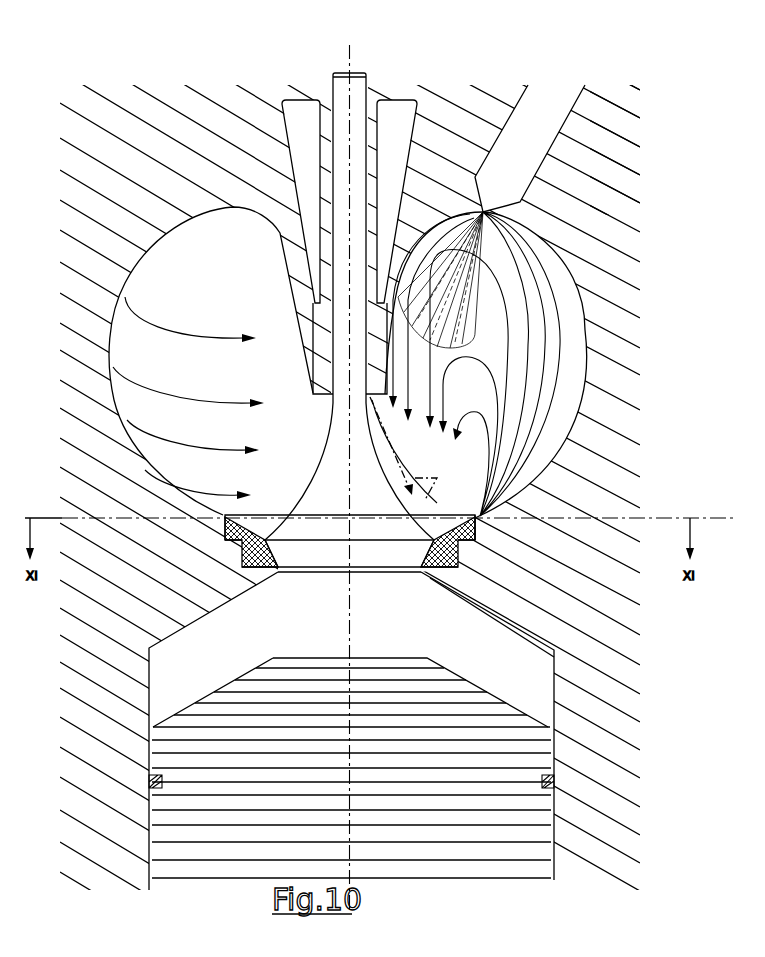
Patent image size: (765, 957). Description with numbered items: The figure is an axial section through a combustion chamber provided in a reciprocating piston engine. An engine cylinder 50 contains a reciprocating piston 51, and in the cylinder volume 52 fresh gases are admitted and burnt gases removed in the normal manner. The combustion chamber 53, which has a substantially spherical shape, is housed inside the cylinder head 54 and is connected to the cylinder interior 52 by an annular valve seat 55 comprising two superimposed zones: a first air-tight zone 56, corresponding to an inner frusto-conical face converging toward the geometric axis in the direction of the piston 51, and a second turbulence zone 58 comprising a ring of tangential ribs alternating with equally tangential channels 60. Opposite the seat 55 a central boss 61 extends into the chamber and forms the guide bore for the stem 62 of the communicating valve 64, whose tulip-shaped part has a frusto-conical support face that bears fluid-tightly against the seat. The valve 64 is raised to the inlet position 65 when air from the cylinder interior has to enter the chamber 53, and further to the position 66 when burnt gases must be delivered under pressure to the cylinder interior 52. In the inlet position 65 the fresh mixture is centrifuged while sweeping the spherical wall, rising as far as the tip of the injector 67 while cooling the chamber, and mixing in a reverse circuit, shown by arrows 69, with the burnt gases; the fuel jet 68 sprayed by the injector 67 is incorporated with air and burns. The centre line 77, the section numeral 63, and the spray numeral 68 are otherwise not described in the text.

The engine cylinder 50 is at (82, 718).
The reciprocating piston 51 is at (470, 863).
The cylinder volume 52 is at (246, 643).
The combustion chamber 53 is at (557, 281).
The cylinder head 54 is at (626, 154).
The annular valve seat 55 is at (433, 578).
The first air-tight zone 56 is at (200, 540).
The second turbulence zone 58 is at (213, 538).
The tangential channels 60 is at (448, 528).
The central boss 61 is at (318, 345).
The valve stem 62 is at (357, 88).
The valve 63 is at (345, 425).
The valve 64 is at (305, 551).
The inlet position 65 is at (432, 477).
The further raised position 66 is at (404, 455).
The injector 67 is at (530, 161).
The fuel spray 68 is at (462, 243).
The reverse circuit arrows 69 is at (474, 364).
The valve axis 77 is at (349, 623).